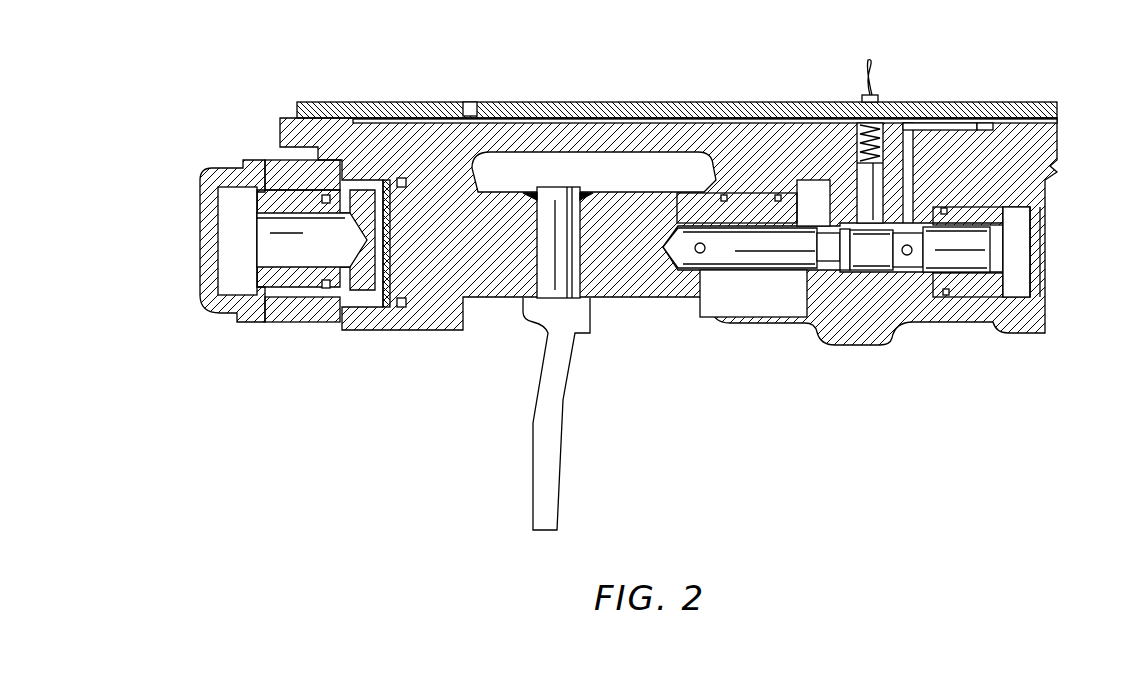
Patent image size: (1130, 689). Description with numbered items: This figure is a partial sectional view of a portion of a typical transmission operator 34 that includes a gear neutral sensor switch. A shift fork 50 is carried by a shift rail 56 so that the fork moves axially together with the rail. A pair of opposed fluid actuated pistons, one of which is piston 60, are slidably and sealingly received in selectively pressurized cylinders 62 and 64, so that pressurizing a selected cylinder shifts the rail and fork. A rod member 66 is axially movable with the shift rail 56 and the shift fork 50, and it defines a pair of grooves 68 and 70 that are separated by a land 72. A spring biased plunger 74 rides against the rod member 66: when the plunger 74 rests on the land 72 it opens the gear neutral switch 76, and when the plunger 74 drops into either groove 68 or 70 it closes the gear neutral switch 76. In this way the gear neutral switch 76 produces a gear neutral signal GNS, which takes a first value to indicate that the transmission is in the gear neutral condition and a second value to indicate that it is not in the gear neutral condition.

The transmission operator 34 is at (458, 401).
The shift fork 50 is at (547, 470).
The shift rail 56 is at (488, 260).
The fluid actuated piston 60 is at (980, 293).
The selectively pressurized cylinder 62 is at (238, 242).
The selectively pressurized cylinder 64 is at (1017, 270).
The rod member 66 is at (717, 253).
The groove 68 is at (827, 258).
The groove 70 is at (910, 260).
The land 72 is at (868, 258).
The spring biased plunger 74 is at (857, 180).
The gear neutral switch 76 is at (860, 102).
The gear neutral signal GNS is at (880, 73).